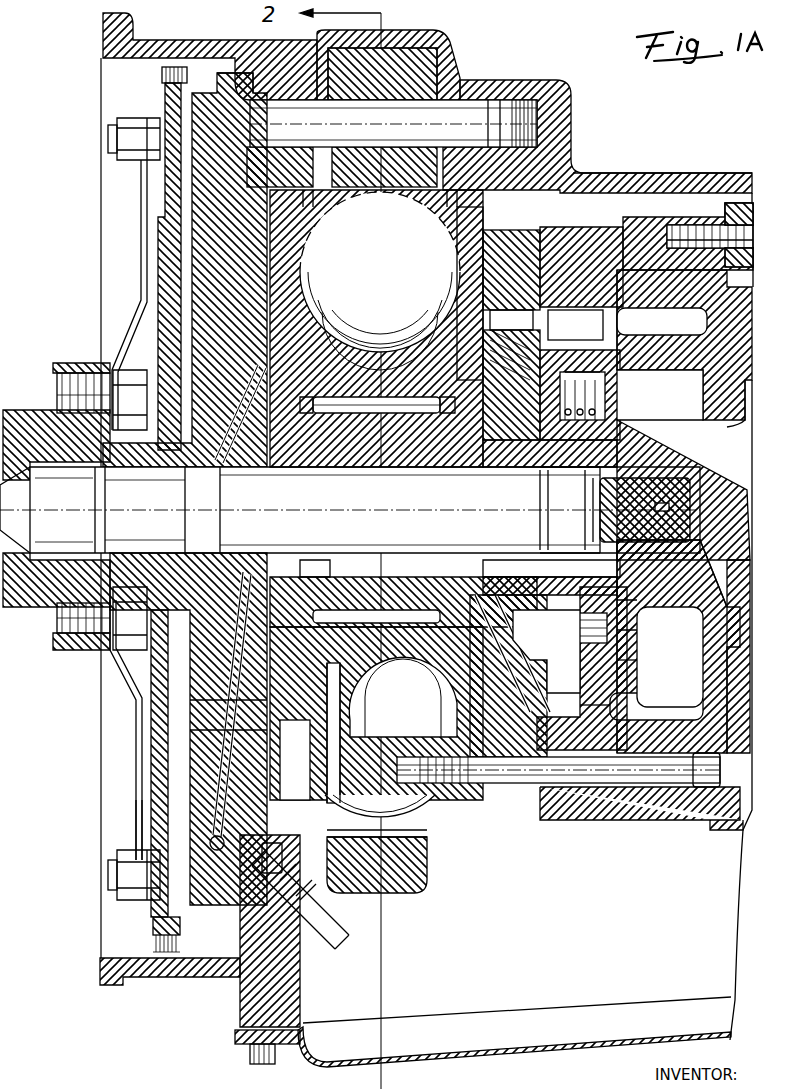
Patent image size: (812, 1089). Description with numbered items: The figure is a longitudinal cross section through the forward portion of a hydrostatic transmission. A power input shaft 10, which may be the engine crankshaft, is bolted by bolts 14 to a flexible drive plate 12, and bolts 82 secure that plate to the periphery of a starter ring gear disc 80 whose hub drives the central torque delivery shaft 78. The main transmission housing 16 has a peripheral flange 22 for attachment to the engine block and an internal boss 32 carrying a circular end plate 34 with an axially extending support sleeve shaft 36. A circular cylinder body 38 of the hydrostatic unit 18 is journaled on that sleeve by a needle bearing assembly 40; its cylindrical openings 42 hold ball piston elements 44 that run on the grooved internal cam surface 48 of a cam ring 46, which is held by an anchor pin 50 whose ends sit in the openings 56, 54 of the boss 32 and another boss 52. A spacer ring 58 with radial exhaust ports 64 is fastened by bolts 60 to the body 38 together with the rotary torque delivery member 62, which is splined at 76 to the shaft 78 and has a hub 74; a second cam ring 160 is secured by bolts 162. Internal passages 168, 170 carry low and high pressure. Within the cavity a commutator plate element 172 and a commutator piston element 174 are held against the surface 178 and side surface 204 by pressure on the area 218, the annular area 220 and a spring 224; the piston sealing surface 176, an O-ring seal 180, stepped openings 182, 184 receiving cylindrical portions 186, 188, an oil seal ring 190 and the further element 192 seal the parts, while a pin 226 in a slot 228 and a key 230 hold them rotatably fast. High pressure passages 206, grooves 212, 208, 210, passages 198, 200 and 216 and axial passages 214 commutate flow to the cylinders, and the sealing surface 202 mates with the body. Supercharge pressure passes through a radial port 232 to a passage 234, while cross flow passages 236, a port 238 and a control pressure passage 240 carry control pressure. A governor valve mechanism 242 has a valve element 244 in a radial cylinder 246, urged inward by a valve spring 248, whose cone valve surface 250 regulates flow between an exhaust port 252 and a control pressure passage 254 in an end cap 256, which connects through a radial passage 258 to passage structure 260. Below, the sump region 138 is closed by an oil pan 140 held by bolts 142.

The power input shaft 10 is at (30, 408).
The flexible drive plate 12 is at (140, 215).
The bolts 14 is at (116, 380).
The main transmission housing 16 is at (598, 173).
The hydrostatic unit 18 is at (446, 218).
The peripheral flange 22 is at (110, 30).
The internal boss 32 is at (258, 80).
The circular end plate 34 is at (200, 178).
The support sleeve shaft 36 is at (404, 468).
The circular cylinder body 38 is at (270, 328).
The needle bearing assembly 40 is at (360, 572).
The cylindrical openings 42 is at (282, 275).
The ball piston element 44 is at (282, 302).
The cam ring 46 is at (440, 44).
The internal cam surface 48 is at (335, 216).
The anchor pin 50 is at (474, 80).
The boss 52 is at (518, 130).
The opening 54 is at (476, 128).
The opening 56 is at (288, 100).
The spacer ring 58 is at (584, 822).
The bolts 60 is at (583, 805).
The rotary torque delivery member 62 is at (694, 810).
The radial exhaust ports 64 is at (545, 262).
The hub 74 is at (740, 422).
The spline 76 is at (586, 494).
The central torque delivery shaft 78 is at (715, 500).
The starter ring gear disc 80 is at (156, 250).
The bolts 82 is at (130, 125).
The sump region 138 is at (252, 1012).
The oil pan 140 is at (465, 1056).
The bolts 142 is at (252, 1066).
The cam ring 160 is at (742, 178).
The bolts 162 is at (690, 225).
The internal passage 168 is at (730, 452).
The internal passage 170 is at (730, 323).
The commutator plate element 172 is at (482, 345).
The commutator piston element 174 is at (600, 268).
The sealing surface 176 is at (600, 330).
The flat sealing surface 178 is at (628, 294).
The O-ring seal 180 is at (545, 487).
The stepped diameter opening 182 is at (606, 330).
The stepped diameter opening 184 is at (450, 252).
The cylindrical portion 186 is at (562, 372).
The cylindrical portion 188 is at (446, 272).
The oil seal ring 190 is at (582, 376).
The carrier 192 is at (550, 262).
The passages 198 is at (706, 318).
The axial passages 200 is at (602, 406).
The flat sealing surface 202 is at (402, 294).
The flat side surface 204 is at (455, 342).
The high pressure passages 206 is at (542, 605).
The annular groove 208 is at (612, 712).
The annular groove 210 is at (620, 674).
The groove 212 is at (403, 698).
The axially extending passages 214 is at (442, 654).
The passages 216 is at (430, 470).
The high pressure area 218 is at (506, 342).
The annular area 220 is at (590, 274).
The spring 224 is at (626, 616).
The pin 226 is at (548, 826).
The slot 228 is at (496, 790).
The key 230 is at (668, 592).
The radial port 232 is at (576, 562).
The supercharge pressure passage 234 is at (520, 540).
The cross flow passages 236 is at (466, 562).
The port 238 is at (522, 562).
The control pressure passage 240 is at (312, 546).
The governor valve mechanism 242 is at (267, 713).
The valve element 244 is at (265, 742).
The radial cylinder 246 is at (267, 770).
The valve spring 248 is at (160, 812).
The cone valve surface 250 is at (148, 816).
The exhaust port 252 is at (267, 788).
The control pressure passage 254 is at (116, 858).
The end cap 256 is at (364, 850).
The radial passage 258 is at (250, 696).
The passage structure 260 is at (284, 576).